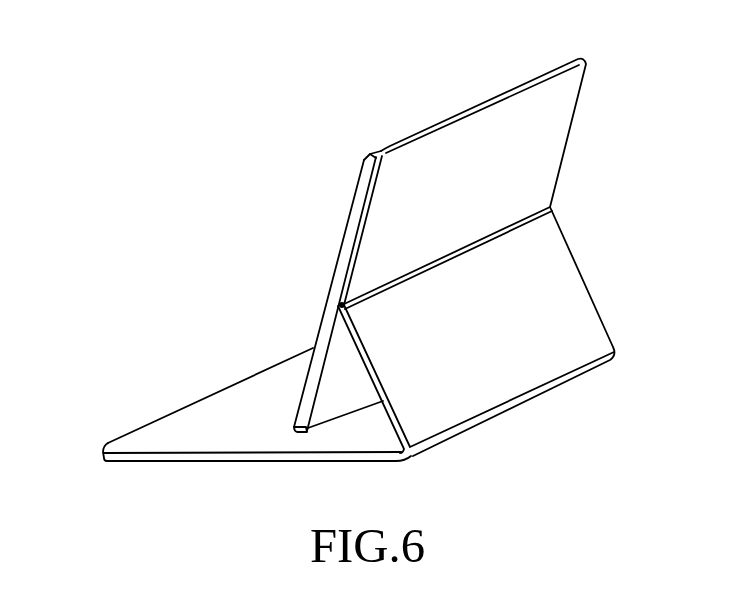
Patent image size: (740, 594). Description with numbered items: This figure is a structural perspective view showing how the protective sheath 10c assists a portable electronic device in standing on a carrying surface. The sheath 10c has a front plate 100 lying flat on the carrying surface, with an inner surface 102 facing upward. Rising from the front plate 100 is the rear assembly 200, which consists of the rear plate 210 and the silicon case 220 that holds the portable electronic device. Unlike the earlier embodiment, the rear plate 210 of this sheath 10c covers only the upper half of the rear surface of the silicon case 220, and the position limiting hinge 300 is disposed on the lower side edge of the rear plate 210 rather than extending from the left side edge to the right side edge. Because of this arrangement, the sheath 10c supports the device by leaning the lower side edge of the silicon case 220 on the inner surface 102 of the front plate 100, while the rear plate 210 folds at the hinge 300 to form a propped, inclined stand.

The protective sheath 10c is at (341, 269).
The front plate 100 is at (227, 426).
The inner surface 102 is at (168, 441).
The rear cover assembly 200 is at (454, 245).
The rear plate 210 is at (437, 170).
The silicon case 220 is at (344, 257).
The position limiting hinge 300 is at (340, 305).